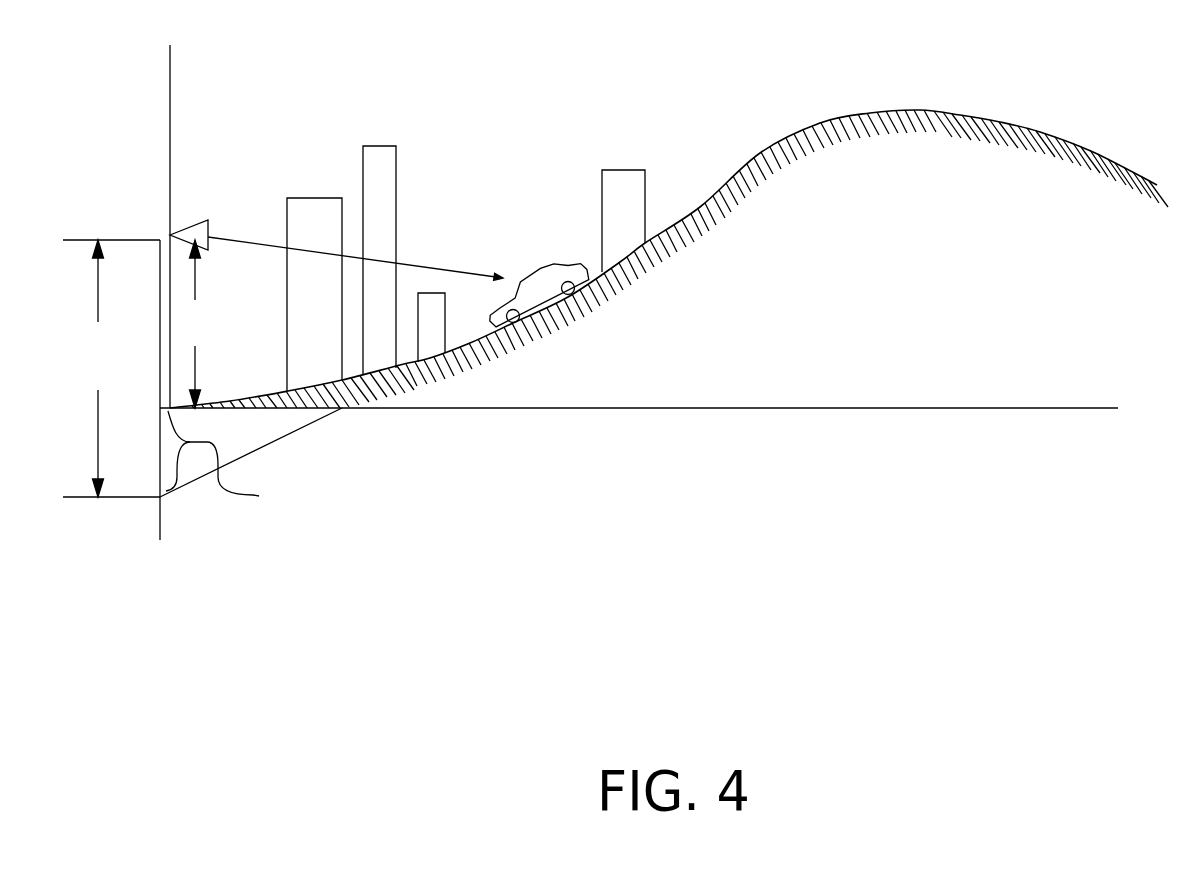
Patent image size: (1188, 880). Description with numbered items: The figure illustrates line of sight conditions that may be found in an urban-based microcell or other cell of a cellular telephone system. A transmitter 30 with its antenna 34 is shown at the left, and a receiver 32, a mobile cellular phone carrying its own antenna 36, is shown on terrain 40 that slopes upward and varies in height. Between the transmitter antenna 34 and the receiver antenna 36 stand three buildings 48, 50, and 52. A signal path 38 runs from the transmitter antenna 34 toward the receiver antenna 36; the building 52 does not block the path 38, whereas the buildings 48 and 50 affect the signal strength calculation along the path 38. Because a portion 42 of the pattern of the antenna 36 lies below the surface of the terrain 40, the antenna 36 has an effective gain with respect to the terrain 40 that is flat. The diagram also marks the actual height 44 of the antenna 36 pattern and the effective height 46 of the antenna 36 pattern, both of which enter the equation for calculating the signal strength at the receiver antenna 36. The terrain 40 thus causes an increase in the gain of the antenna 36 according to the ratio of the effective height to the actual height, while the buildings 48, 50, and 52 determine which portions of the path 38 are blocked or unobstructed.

The transmitter 30 is at (170, 233).
The receiver 32 is at (524, 275).
The antenna 34 is at (173, 233).
The antenna 36 is at (504, 276).
The path 38 is at (400, 262).
The terrain 40 is at (961, 112).
The portion of the antenna pattern 42 is at (251, 460).
The actual height 44 is at (217, 324).
The effective height 46 is at (75, 368).
The building 48 is at (340, 198).
The building 50 is at (388, 146).
The building 52 is at (422, 292).